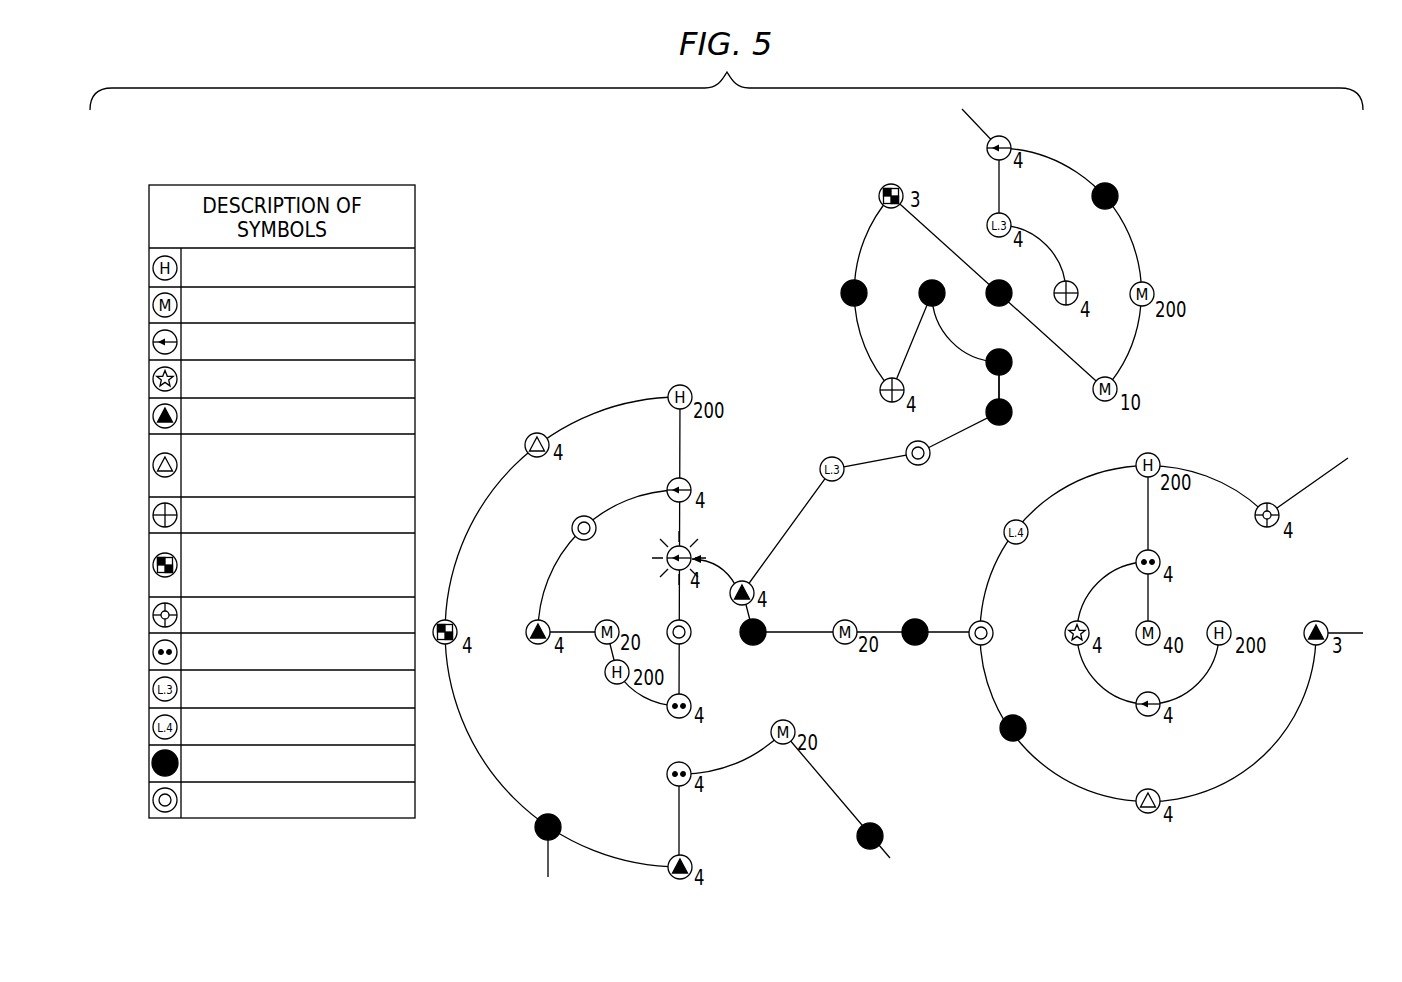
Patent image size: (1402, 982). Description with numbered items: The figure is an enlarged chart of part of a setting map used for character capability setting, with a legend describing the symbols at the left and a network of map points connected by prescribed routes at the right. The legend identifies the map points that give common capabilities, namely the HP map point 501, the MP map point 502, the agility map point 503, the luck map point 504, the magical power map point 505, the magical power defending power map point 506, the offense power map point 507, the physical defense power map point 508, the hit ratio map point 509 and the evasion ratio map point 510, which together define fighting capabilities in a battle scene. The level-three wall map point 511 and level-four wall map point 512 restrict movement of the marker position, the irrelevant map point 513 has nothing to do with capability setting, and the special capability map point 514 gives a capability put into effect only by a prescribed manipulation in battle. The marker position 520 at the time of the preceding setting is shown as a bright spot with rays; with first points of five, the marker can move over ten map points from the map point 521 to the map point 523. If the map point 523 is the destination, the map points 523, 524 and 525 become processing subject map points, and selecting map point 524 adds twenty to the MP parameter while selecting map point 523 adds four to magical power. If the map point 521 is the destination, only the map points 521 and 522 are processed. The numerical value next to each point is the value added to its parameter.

The HP map point 501 is at (153, 268).
The MP map point 502 is at (153, 305).
The agility map point 503 is at (153, 342).
The luck map point 504 is at (153, 379).
The magical power map point 505 is at (153, 416).
The magical power defending power map point 506 is at (153, 465).
The offense power map point 507 is at (153, 515).
The physical defense power map point 508 is at (153, 565).
The hit ratio map point 509 is at (153, 615).
The evasion ratio map point 510 is at (153, 652).
The level-3 wall map point 511 is at (153, 689).
The level-4 wall map point 512 is at (153, 727).
The irrelevant map point 513 is at (153, 763).
The special capability map point 514 is at (153, 800).
The marker position 520 is at (668, 545).
The map point 521 is at (973, 624).
The map point 522 is at (1008, 523).
The map point 523 is at (531, 621).
The map point 524 is at (603, 620).
The map point 525 is at (580, 517).